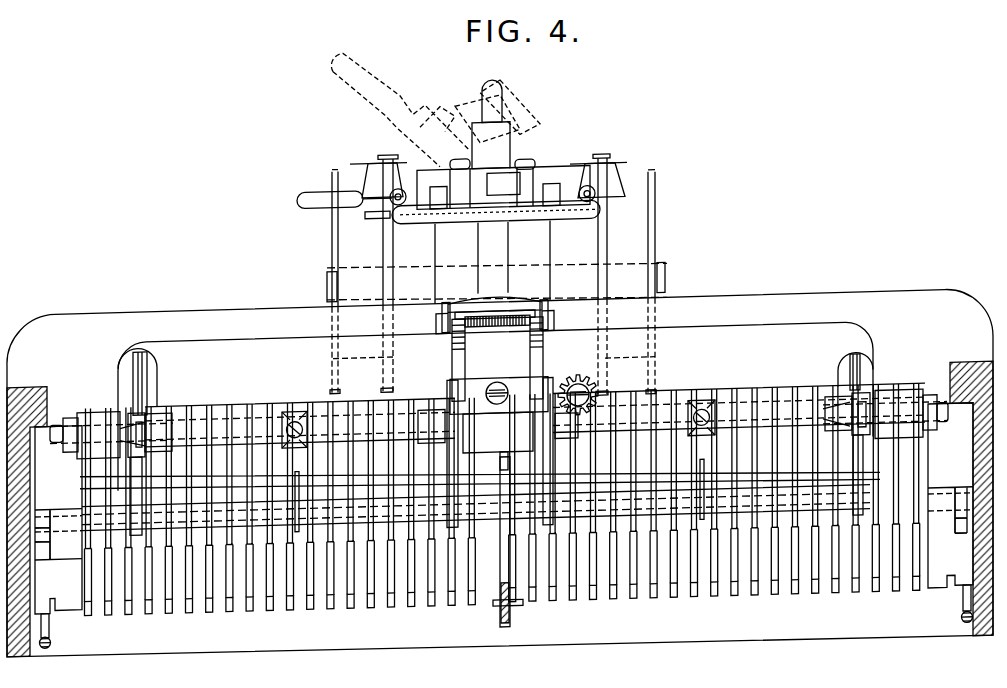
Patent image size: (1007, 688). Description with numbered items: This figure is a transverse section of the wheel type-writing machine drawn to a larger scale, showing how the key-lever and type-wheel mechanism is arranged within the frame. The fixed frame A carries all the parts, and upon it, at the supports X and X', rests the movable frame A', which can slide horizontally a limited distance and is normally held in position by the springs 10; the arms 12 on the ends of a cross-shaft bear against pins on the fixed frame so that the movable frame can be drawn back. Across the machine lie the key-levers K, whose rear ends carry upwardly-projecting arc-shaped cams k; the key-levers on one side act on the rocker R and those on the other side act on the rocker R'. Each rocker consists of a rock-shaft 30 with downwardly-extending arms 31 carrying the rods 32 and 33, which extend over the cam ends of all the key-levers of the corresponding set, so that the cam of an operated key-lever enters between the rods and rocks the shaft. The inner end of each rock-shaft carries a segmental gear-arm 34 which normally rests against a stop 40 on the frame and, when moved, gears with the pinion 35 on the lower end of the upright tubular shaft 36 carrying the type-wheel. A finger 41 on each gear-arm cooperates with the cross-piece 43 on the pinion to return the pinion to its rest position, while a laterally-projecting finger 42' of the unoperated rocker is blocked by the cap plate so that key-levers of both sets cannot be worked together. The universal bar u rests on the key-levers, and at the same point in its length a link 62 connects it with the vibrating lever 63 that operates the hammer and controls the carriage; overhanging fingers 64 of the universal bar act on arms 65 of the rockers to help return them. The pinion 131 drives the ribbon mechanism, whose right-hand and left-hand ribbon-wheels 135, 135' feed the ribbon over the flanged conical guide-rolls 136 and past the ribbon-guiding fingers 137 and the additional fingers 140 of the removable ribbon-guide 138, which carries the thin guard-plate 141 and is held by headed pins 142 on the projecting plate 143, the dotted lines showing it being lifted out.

The fixed frame A is at (500, 475).
The movable frame A' is at (494, 398).
The support X is at (27, 512).
The support X' is at (971, 486).
The universal bar u is at (504, 507).
The arms 12 is at (44, 544).
The springs 10 is at (962, 629).
The arc-shaped cams k is at (502, 499).
The key-levers K is at (535, 427).
The rocker R is at (306, 496).
The rocker R' is at (725, 484).
The rocker rod 33 is at (483, 478).
The rocker rod 32 is at (476, 506).
The downwardly-extending arms 31 is at (496, 453).
The rock-shaft 30 is at (128, 427).
The overhanging fingers 64 is at (135, 382).
The arms 65 is at (130, 413).
The stop 40 is at (499, 415).
The pinion 131 is at (576, 377).
The cross-piece 43 is at (495, 296).
The finger 41 is at (447, 301).
The laterally-projecting finger 42' is at (494, 319).
The pinion 35 is at (497, 325).
The segmental gear-arm 34 is at (497, 359).
The link 62 is at (498, 603).
The vibrating lever 63 is at (515, 607).
The right-hand ribbon-wheel 135 is at (360, 281).
The left-hand ribbon-wheel 135' is at (635, 282).
The upright tubular shaft 36 is at (497, 262).
The guard-plate 141 is at (503, 187).
The additional fingers 140 is at (498, 188).
The ribbon-guiding fingers 137 is at (468, 156).
The projecting plate 143 is at (370, 213).
The headed pins 142 is at (398, 186).
The removable ribbon-guide 138 is at (418, 128).
The flanged conical guide-rolls 136 is at (383, 155).